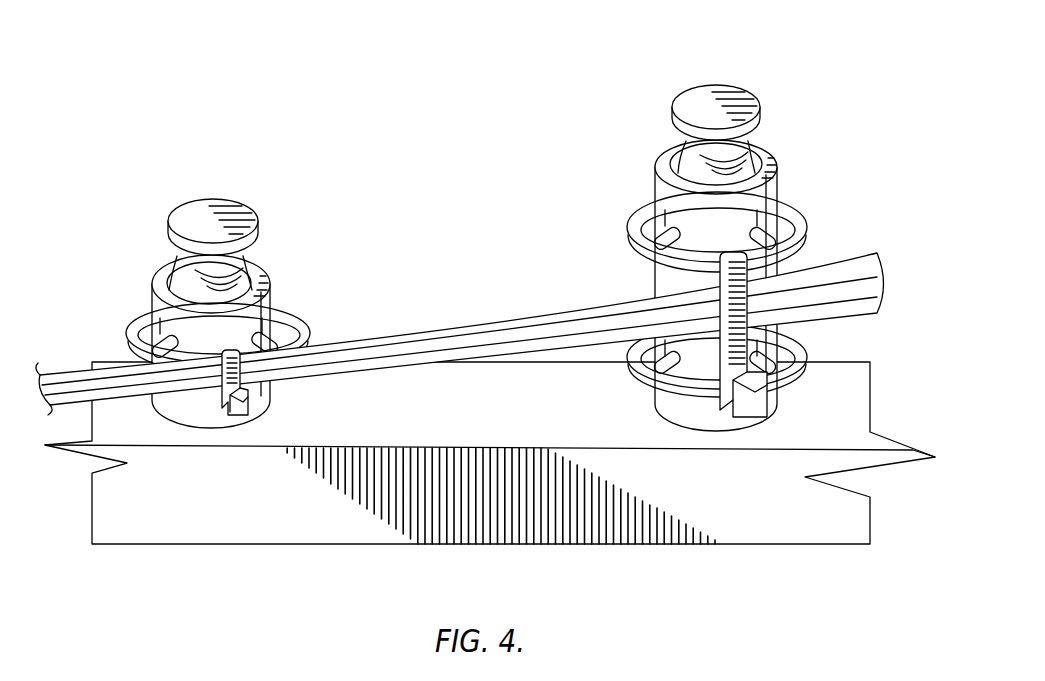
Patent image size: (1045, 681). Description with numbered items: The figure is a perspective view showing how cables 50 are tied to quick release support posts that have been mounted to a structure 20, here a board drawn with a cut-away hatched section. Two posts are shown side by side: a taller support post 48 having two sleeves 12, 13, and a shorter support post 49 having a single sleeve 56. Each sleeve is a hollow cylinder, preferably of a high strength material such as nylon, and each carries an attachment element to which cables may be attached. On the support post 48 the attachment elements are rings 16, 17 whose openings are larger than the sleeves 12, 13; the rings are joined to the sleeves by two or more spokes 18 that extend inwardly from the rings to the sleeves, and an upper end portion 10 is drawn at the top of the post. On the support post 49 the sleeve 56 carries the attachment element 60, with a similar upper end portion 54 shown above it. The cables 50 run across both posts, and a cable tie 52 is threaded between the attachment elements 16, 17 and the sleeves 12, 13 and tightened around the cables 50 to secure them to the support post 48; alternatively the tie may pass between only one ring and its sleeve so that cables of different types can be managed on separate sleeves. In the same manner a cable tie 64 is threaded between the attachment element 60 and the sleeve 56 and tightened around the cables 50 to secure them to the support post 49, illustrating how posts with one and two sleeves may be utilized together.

The knob head of first post 10 is at (753, 90).
The sleeve 12 is at (773, 150).
The sleeve 13 is at (777, 337).
The ring 16 is at (803, 225).
The ring 17 is at (785, 384).
The spokes 18 is at (776, 200).
The structure 20 is at (837, 515).
The support post 48 is at (775, 242).
The support post 49 is at (233, 311).
The cables 50 is at (467, 337).
The cable tie 52 is at (722, 250).
The knob head of second post 54 is at (237, 217).
The sleeve 56 is at (273, 328).
The attachment element 60 is at (308, 338).
The cable tie 64 is at (231, 347).